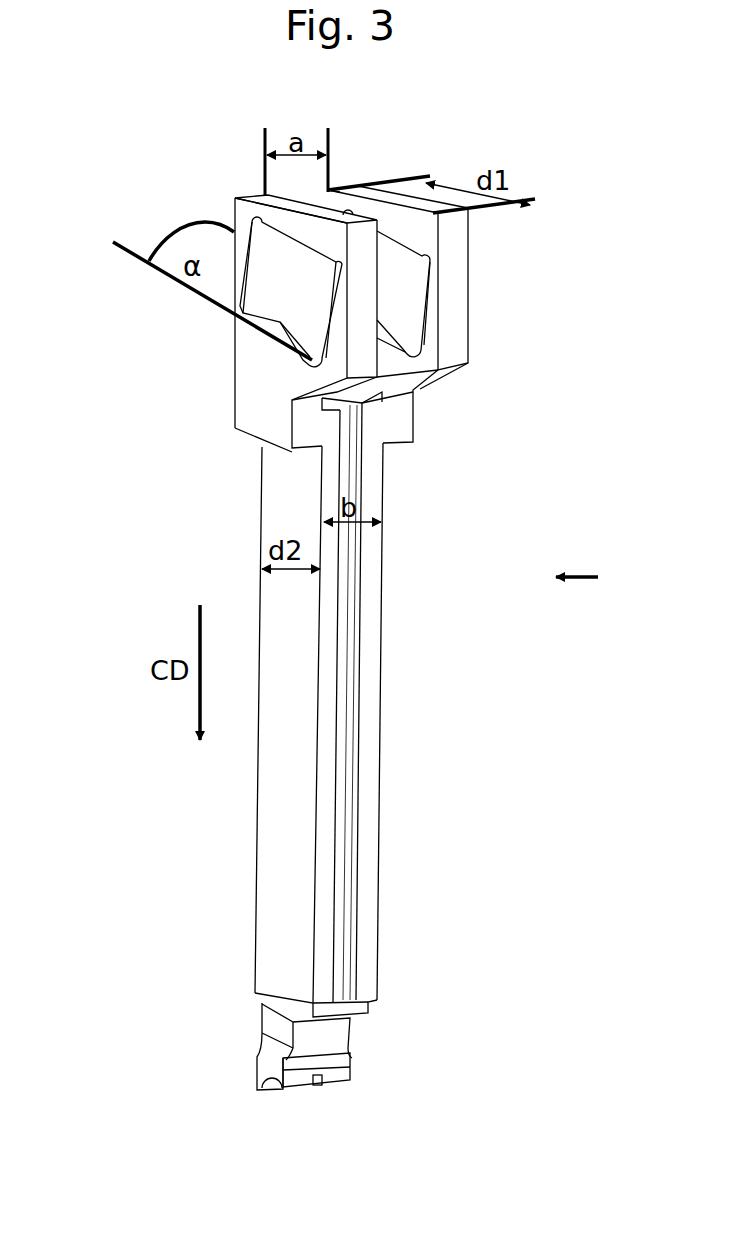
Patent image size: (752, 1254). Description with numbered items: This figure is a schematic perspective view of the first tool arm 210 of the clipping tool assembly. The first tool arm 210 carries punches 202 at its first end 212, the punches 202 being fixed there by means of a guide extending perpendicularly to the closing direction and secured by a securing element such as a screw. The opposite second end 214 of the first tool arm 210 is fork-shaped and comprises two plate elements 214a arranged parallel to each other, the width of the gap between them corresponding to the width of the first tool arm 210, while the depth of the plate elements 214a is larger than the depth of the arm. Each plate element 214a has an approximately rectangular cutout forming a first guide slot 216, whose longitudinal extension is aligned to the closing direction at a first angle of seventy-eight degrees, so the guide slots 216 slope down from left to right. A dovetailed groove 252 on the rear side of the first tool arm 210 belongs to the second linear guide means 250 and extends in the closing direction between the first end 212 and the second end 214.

The first tool arm 210 is at (115, 156).
The second end 214 is at (256, 424).
The plate elements 214a is at (355, 357).
The first guide slot 216 is at (310, 301).
The first end 212 is at (272, 960).
The groove 252 is at (345, 633).
The second linear guide means 250 is at (655, 594).
The punches 202 is at (266, 1050).